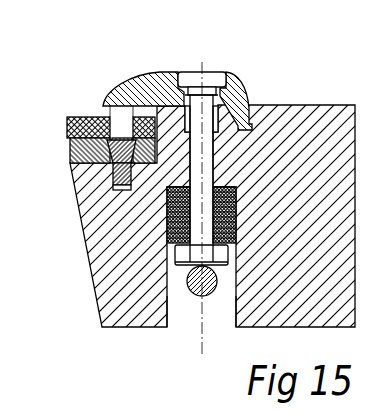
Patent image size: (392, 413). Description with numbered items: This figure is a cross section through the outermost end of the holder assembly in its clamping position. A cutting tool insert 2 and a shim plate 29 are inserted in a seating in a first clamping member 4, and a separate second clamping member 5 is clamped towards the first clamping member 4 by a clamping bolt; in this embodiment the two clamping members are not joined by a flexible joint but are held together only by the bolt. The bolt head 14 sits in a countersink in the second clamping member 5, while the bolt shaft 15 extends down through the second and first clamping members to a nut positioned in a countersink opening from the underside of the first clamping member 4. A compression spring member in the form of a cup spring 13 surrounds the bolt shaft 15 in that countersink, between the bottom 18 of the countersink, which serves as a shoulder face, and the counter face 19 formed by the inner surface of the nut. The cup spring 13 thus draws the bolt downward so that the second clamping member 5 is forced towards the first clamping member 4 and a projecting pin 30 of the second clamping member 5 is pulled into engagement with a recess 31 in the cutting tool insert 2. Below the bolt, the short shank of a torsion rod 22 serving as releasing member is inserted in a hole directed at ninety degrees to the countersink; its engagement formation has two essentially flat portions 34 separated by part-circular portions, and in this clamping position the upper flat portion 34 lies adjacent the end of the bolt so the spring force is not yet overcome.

The cutting tool insert 2 is at (72, 128).
The first clamping member 4 is at (104, 257).
The second clamping member 5 is at (148, 90).
The cup spring 13 is at (230, 211).
The bolt head 14 is at (209, 78).
The bolt shaft 15 is at (205, 148).
The bottom of the countersink 18 is at (226, 191).
The counter face 19 is at (224, 238).
The torsion rod 22 is at (195, 283).
The shim plate 29 is at (78, 147).
The projecting pin 30 is at (117, 115).
The recess 31 is at (117, 128).
The flat portions 34 is at (204, 288).